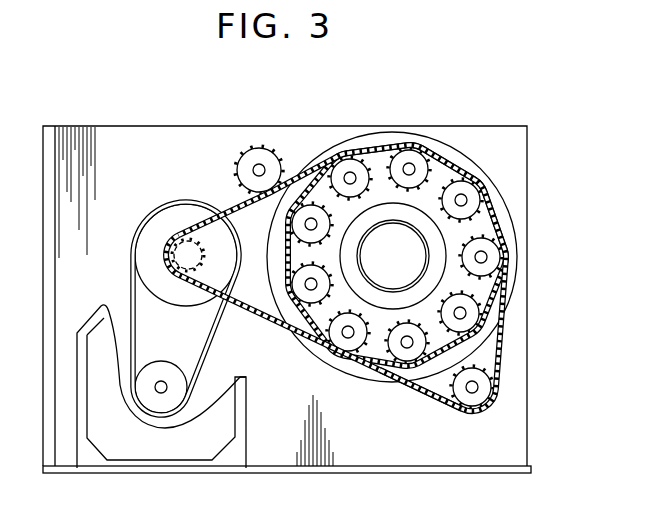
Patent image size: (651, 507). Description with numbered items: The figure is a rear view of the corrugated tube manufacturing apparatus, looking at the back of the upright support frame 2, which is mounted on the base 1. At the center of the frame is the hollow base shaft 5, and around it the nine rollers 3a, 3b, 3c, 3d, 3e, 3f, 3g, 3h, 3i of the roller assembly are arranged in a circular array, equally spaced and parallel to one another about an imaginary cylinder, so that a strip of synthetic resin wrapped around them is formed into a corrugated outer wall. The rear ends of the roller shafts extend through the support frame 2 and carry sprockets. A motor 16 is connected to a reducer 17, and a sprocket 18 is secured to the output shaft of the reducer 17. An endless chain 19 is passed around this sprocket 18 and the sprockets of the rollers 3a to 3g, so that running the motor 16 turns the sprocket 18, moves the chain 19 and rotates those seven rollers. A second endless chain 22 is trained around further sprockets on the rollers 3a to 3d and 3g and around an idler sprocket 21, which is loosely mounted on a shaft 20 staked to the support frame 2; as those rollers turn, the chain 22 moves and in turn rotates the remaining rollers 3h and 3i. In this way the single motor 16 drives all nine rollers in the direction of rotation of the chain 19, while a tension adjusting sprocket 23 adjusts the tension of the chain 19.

The base 1 is at (531, 470).
The support frame 2 is at (129, 126).
The roller 3a is at (353, 155).
The roller 3b is at (412, 146).
The roller 3c is at (466, 190).
The roller 3d is at (490, 258).
The roller 3e is at (478, 313).
The roller 3f is at (407, 350).
The roller 3g is at (345, 342).
The roller 3h is at (306, 305).
The roller 3i is at (296, 228).
The base shaft 5 is at (401, 266).
The motor 16 is at (247, 432).
The reducer 17 is at (137, 226).
The sprocket 18 is at (187, 240).
The endless chain 19 is at (253, 307).
The shaft 20 is at (473, 393).
The idler sprocket 21 is at (458, 398).
The second endless chain 22 is at (503, 353).
The tension adjusting sprocket 23 is at (259, 147).